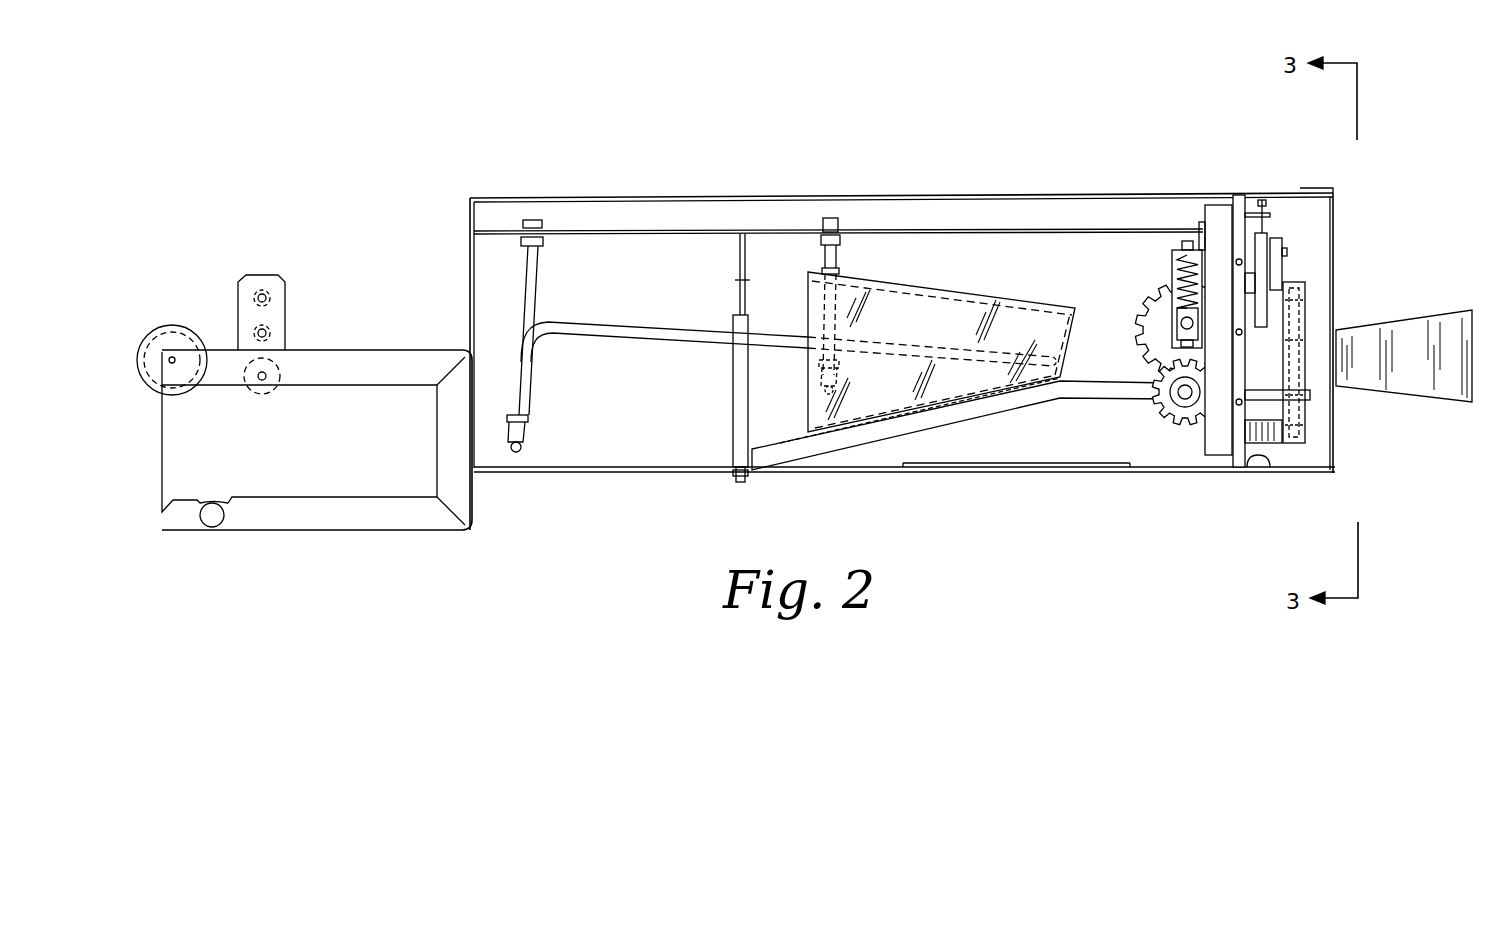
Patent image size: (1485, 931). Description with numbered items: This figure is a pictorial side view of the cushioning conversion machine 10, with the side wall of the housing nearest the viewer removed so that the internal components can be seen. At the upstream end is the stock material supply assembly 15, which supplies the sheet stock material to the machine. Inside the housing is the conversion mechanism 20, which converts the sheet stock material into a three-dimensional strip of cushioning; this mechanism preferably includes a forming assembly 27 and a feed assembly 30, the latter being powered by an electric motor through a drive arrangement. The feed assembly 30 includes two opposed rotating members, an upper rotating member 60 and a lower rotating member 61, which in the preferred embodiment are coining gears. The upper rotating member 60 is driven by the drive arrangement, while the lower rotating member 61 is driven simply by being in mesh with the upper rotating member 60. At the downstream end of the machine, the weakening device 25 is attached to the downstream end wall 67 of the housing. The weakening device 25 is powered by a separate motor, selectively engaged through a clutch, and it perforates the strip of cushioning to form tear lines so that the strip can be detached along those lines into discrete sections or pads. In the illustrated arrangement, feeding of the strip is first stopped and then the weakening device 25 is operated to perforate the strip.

The cushioning conversion machine 10 is at (358, 120).
The stock material supply assembly 15 is at (320, 264).
The conversion mechanism 20 is at (676, 258).
The weakening device 25 is at (1303, 228).
The forming assembly 27 is at (938, 261).
The feed assembly 30 is at (1111, 293).
The upper rotating member 60 is at (1147, 323).
The lower rotating member 61 is at (1167, 433).
The downstream end wall 67 is at (1270, 470).